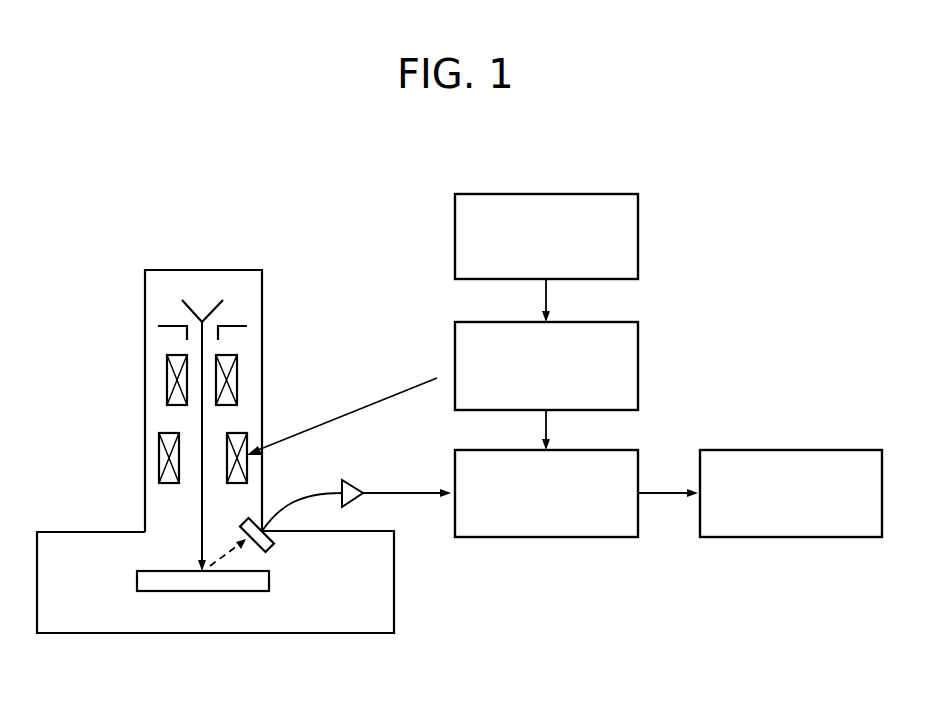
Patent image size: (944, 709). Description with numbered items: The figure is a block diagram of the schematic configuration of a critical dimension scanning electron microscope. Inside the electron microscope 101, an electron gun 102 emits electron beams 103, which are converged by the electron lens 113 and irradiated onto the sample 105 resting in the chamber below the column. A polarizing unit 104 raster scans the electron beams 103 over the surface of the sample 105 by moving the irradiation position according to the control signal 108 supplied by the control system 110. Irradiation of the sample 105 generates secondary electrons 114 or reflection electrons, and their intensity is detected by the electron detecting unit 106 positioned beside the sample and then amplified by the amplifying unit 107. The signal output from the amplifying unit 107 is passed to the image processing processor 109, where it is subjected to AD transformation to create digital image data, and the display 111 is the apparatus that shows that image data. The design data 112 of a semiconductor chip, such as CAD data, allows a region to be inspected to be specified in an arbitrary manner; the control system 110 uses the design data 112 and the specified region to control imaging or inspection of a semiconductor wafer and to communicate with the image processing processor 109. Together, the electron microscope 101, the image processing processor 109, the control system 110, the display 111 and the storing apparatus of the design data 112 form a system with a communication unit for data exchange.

The electron microscope 101 is at (244, 270).
The electron gun 102 is at (170, 326).
The electron beams 103 is at (203, 427).
The polarizing unit 104 is at (159, 458).
The sample 105 is at (164, 592).
The electron detecting unit 106 is at (268, 548).
The amplifying unit 107 is at (348, 482).
The control signal 108 is at (386, 398).
The image processing processor 109 is at (601, 538).
The control system 110 is at (639, 332).
The display 111 is at (843, 450).
The design data 112 is at (639, 201).
The electron lens 113 is at (167, 377).
The secondary electrons 114 is at (223, 556).